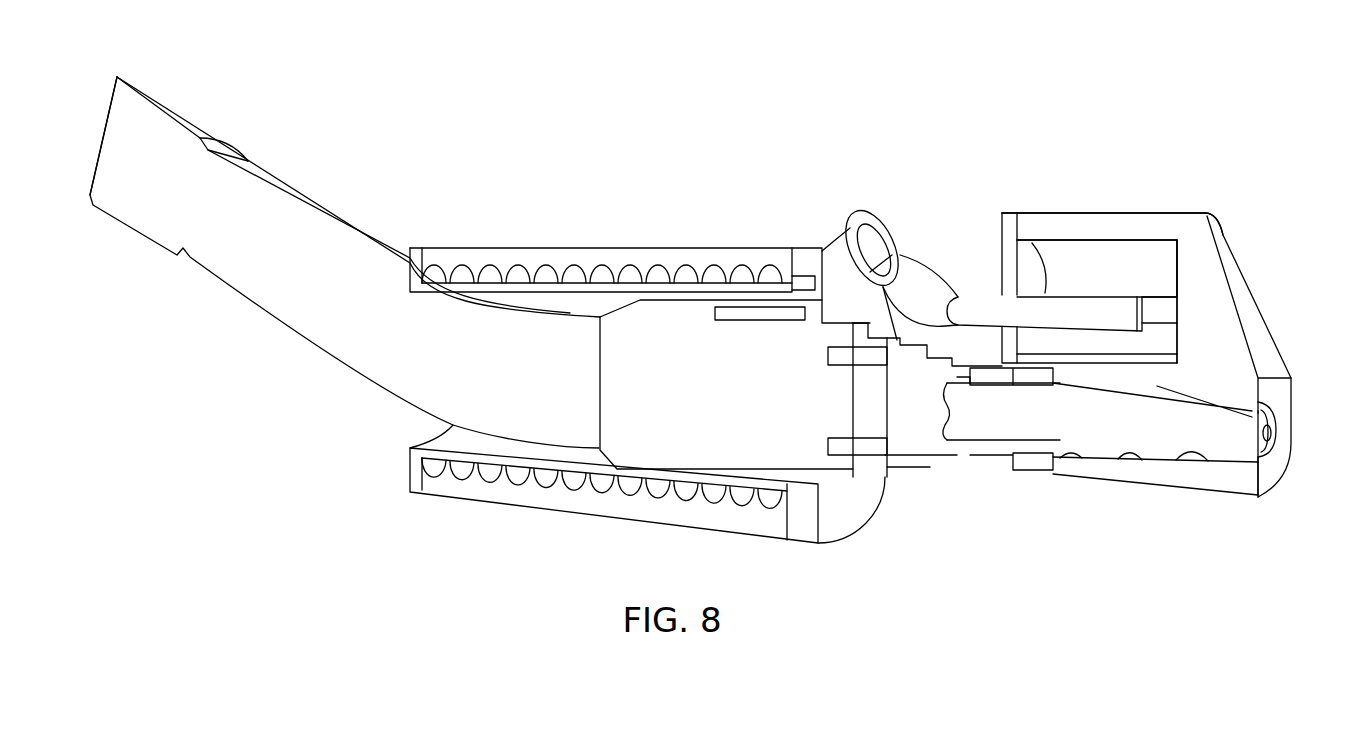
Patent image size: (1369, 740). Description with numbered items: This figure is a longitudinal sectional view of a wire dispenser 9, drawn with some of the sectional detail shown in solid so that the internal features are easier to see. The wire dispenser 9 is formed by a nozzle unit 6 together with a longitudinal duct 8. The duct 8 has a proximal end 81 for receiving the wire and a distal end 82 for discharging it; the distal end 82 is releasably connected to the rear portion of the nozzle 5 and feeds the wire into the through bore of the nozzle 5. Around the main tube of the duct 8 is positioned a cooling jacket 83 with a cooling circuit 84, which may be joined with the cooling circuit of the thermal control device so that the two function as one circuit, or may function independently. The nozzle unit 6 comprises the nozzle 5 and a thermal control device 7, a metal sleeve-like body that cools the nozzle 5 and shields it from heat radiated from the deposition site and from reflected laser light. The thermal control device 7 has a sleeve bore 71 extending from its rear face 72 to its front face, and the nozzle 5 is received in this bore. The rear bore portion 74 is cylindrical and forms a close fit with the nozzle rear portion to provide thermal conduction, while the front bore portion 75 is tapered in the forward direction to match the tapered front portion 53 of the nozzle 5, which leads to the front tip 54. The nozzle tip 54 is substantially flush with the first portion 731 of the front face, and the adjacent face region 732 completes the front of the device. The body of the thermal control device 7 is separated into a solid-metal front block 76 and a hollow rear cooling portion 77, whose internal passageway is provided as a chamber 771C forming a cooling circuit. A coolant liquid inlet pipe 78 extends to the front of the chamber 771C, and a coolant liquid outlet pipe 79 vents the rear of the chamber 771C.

The nozzle 5 is at (1002, 425).
The nozzle unit 6 is at (1150, 130).
The thermal control device 7 is at (1038, 228).
The longitudinal duct 8 is at (277, 248).
The wire dispenser 9 is at (534, 120).
The front portion 53 is at (1237, 450).
The front tip 54 is at (1275, 448).
The sleeve bore 71 is at (1138, 462).
The rear face 72 is at (997, 238).
The rear bore portion 74 is at (1073, 462).
The front bore portion 75 is at (1185, 463).
The solid-metal front block 76 is at (1208, 322).
The rear cooling portion 77 is at (1087, 212).
The chamber 771C is at (1125, 260).
The coolant liquid inlet pipe 78 is at (1117, 310).
The coolant liquid outlet pipe 79 is at (912, 283).
The proximal end 81 is at (102, 123).
The distal end 82 is at (977, 457).
The cooling jacket 83 is at (647, 270).
The cooling circuit 84 is at (700, 270).
The first portion 731 is at (1280, 397).
The inclined face 732 is at (1255, 322).